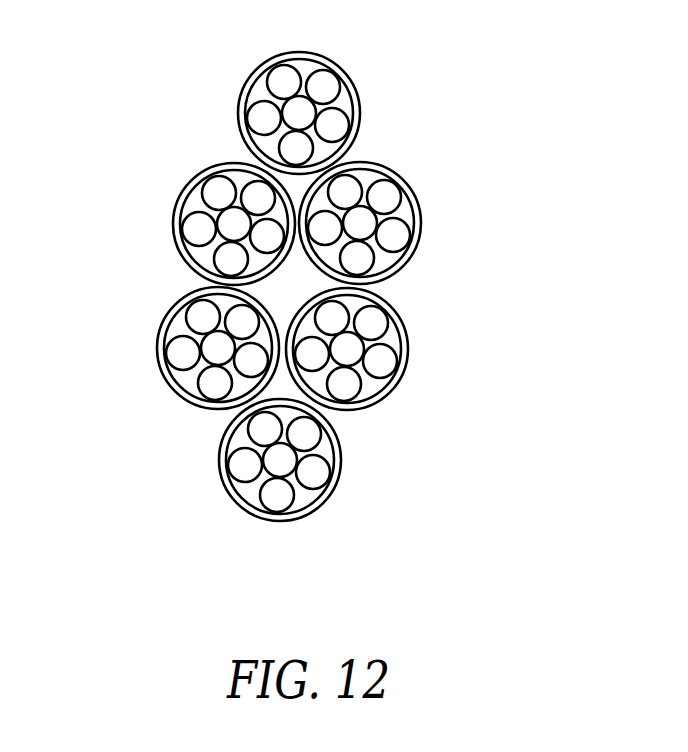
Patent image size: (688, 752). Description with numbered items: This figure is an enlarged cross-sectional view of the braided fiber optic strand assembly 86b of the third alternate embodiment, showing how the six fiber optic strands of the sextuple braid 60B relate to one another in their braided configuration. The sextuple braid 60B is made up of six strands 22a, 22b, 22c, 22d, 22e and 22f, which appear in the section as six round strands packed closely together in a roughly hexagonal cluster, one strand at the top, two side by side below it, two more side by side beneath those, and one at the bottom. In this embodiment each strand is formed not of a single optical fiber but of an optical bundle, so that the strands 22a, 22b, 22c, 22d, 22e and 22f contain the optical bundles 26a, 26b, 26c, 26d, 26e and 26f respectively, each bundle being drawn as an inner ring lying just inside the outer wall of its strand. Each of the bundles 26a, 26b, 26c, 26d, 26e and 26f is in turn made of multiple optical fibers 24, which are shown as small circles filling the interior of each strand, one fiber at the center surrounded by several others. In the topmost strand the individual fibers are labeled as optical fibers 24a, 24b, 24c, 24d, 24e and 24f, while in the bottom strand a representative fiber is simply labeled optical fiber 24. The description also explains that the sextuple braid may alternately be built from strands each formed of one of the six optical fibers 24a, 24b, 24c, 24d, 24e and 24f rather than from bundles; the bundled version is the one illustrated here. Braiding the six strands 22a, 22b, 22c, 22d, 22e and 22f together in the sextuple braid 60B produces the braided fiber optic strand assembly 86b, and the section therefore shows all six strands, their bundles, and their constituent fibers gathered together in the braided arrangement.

The sextuple braid 60B is at (410, 56).
The strand 22a is at (360, 147).
The strand 22b is at (421, 185).
The strand 22c is at (408, 378).
The strand 22d is at (341, 487).
The strand 22e is at (177, 400).
The strand 22f is at (181, 263).
The optical fiber 24 is at (313, 472).
The optical fiber 24a is at (286, 84).
The optical fiber 24b is at (330, 92).
The optical fiber 24c is at (336, 125).
The optical fiber 24d is at (298, 148).
The optical fiber 24e is at (262, 128).
The optical fiber 24f is at (260, 98).
The optical bundle 26a is at (260, 97).
The optical bundle 26b is at (383, 266).
The optical bundle 26c is at (383, 346).
The optical bundle 26d is at (295, 503).
The optical bundle 26e is at (237, 383).
The optical bundle 26f is at (203, 232).
The braided fiber optic strand assembly 86b is at (210, 437).